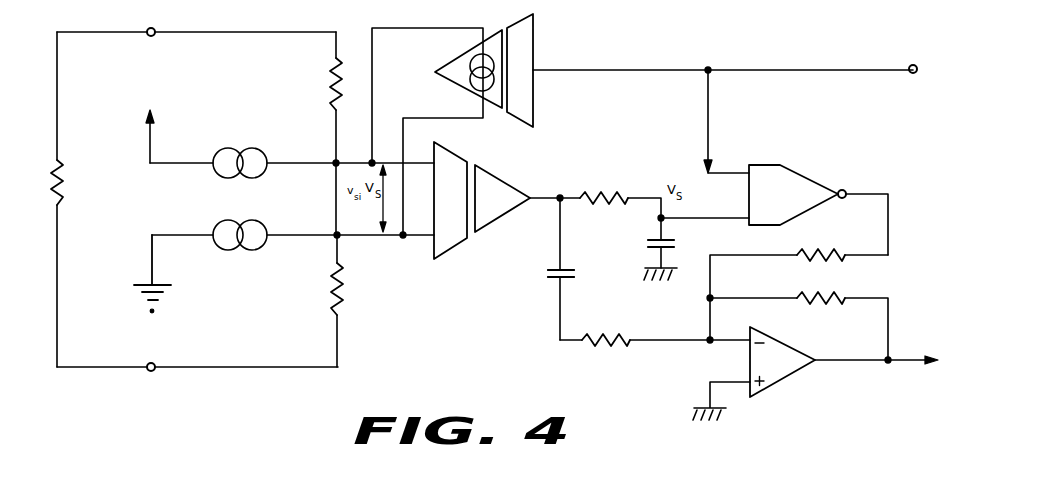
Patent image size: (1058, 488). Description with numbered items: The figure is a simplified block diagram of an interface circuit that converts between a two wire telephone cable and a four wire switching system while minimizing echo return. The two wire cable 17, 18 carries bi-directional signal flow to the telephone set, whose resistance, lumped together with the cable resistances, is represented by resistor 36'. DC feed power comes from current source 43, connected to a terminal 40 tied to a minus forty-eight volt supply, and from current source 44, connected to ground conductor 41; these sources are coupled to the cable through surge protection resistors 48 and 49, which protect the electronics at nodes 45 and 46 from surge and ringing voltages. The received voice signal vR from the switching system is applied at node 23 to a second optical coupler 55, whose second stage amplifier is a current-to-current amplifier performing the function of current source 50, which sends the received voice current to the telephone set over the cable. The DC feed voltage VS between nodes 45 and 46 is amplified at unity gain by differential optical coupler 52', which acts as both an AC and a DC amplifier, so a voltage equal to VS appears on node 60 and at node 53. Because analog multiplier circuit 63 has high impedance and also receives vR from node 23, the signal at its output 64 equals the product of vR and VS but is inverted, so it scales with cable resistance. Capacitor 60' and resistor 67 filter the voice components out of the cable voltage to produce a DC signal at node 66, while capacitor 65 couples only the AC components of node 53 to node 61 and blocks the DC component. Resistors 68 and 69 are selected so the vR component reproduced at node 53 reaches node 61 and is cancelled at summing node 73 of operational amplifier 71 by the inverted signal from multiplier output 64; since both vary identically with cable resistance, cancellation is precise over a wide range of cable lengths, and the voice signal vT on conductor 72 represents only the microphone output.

The cable wire 17 is at (268, 367).
The cable wire 18 is at (278, 32).
The node 23 is at (914, 67).
The resistor 36' is at (78, 182).
The terminal 40 is at (153, 122).
The ground conductor 41 is at (152, 285).
The current source 43 is at (254, 147).
The current source 44 is at (250, 251).
The node 45 is at (334, 165).
The node 46 is at (337, 234).
The surge protection resistor 48 is at (332, 94).
The surge protection resistor 49 is at (338, 294).
The current source 50 is at (478, 54).
The differential optical coupler 52' is at (482, 213).
The node 53 is at (560, 198).
The second optical coupler 55 is at (507, 126).
The node 60 is at (120, 229).
The capacitor 60' is at (679, 259).
The node 61 is at (560, 346).
The analog multiplier circuit 63 is at (797, 167).
The analog multiplier output 64 is at (872, 194).
The capacitor 65 is at (566, 268).
The node 66 is at (709, 299).
The resistor 67 is at (618, 196).
The resistor 68 is at (602, 346).
The resistor 69 is at (828, 256).
The operational amplifier 71 is at (783, 378).
The conductor 72 is at (887, 361).
The summing node 73 is at (709, 343).